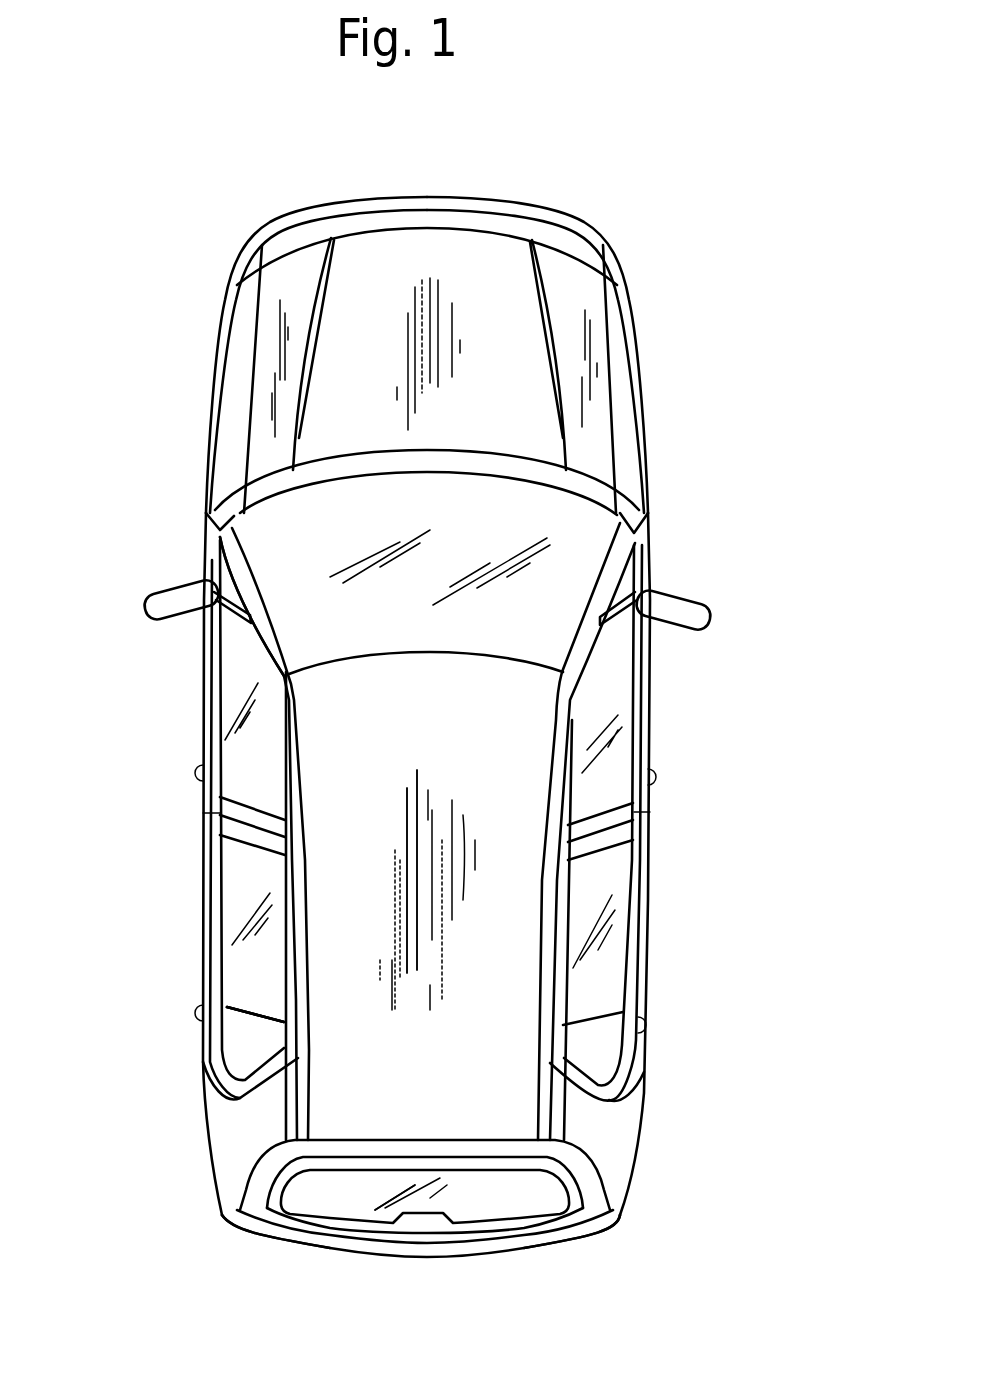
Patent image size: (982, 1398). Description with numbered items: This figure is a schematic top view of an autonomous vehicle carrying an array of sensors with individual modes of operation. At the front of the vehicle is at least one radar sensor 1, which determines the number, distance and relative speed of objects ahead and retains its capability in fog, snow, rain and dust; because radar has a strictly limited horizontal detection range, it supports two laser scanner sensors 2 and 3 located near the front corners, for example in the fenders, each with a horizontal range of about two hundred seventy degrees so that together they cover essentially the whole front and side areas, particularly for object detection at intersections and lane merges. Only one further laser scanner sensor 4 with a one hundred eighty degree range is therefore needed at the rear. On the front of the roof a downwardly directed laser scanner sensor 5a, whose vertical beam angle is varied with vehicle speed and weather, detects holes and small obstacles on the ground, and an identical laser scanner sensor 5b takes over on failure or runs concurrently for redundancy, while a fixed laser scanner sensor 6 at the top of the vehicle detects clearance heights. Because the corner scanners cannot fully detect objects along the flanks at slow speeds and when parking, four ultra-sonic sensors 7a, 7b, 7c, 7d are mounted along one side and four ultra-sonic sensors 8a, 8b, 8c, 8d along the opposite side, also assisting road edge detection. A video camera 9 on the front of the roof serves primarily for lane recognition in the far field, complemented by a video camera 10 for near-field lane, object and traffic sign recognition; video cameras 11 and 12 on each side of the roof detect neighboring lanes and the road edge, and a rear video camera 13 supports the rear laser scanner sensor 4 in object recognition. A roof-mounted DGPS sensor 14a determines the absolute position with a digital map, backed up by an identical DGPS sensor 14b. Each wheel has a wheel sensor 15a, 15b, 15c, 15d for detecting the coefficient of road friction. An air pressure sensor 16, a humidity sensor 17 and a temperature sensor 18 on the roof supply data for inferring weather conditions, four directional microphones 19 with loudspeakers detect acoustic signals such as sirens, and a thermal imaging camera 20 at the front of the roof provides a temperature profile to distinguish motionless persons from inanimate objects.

The radar sensor 1 is at (447, 168).
The laser scanner sensor 2 is at (205, 228).
The laser scanner sensor 3 is at (690, 230).
The laser scanner sensor 4 is at (425, 1313).
The laser scanner sensor 5a is at (425, 733).
The laser scanner sensor 5b is at (412, 871).
The laser scanner sensor 6 is at (513, 730).
The ultra-sonic sensor 7a is at (197, 326).
The ultra-sonic sensor 7b is at (108, 627).
The ultra-sonic sensor 7c is at (167, 887).
The ultra-sonic sensor 7d is at (184, 1220).
The ultra-sonic sensor 8a is at (707, 330).
The ultra-sonic sensor 8b is at (782, 628).
The ultra-sonic sensor 8c is at (718, 897).
The ultra-sonic sensor 8d is at (706, 1219).
The video camera 9 is at (327, 723).
The video camera 10 is at (252, 606).
The video camera 11 is at (337, 877).
The video camera 12 is at (510, 885).
The video camera 13 is at (350, 1118).
The DGPS sensor 14a is at (443, 1123).
The DGPS sensor 14b is at (395, 1197).
The wheel sensor 15a is at (277, 338).
The wheel sensor 15b is at (240, 1127).
The wheel sensor 15c is at (578, 338).
The wheel sensor 15d is at (607, 1130).
The air pressure sensor 16 is at (380, 1050).
The humidity sensor 17 is at (255, 1014).
The temperature sensor 18 is at (255, 1014).
The directional microphone 19 is at (430, 997).
The thermal imaging camera 20 is at (428, 803).